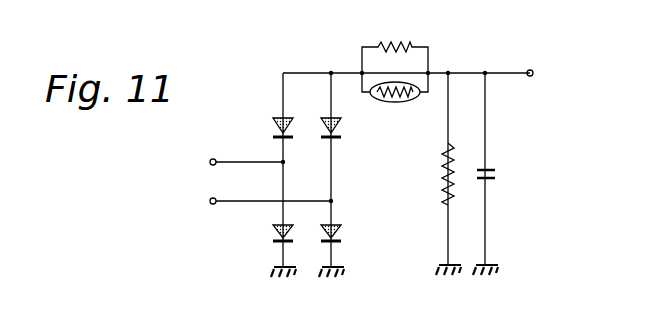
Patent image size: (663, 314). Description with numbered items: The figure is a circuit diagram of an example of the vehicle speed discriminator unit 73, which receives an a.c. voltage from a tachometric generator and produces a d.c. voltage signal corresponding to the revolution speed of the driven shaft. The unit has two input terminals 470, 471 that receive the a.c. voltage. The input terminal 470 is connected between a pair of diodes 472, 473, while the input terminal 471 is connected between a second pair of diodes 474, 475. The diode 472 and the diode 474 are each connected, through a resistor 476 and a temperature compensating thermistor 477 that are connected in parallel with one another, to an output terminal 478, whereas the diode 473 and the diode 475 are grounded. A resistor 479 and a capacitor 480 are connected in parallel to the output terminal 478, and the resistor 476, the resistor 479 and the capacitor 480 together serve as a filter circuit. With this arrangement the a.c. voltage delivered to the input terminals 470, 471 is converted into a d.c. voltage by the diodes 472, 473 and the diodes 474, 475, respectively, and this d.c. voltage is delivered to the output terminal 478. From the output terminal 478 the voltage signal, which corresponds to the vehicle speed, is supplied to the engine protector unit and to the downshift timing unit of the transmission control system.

The vehicle speed discriminator unit 73 is at (538, 30).
The input terminal 470 is at (211, 160).
The input terminal 471 is at (211, 204).
The diode 472 is at (271, 121).
The diode 473 is at (272, 231).
The diode 474 is at (342, 124).
The diode 475 is at (342, 227).
The resistor 476 is at (380, 44).
The temperature compensating thermistor 477 is at (397, 102).
The output terminal 478 is at (532, 70).
The resistor 479 is at (443, 185).
The capacitor 480 is at (495, 178).